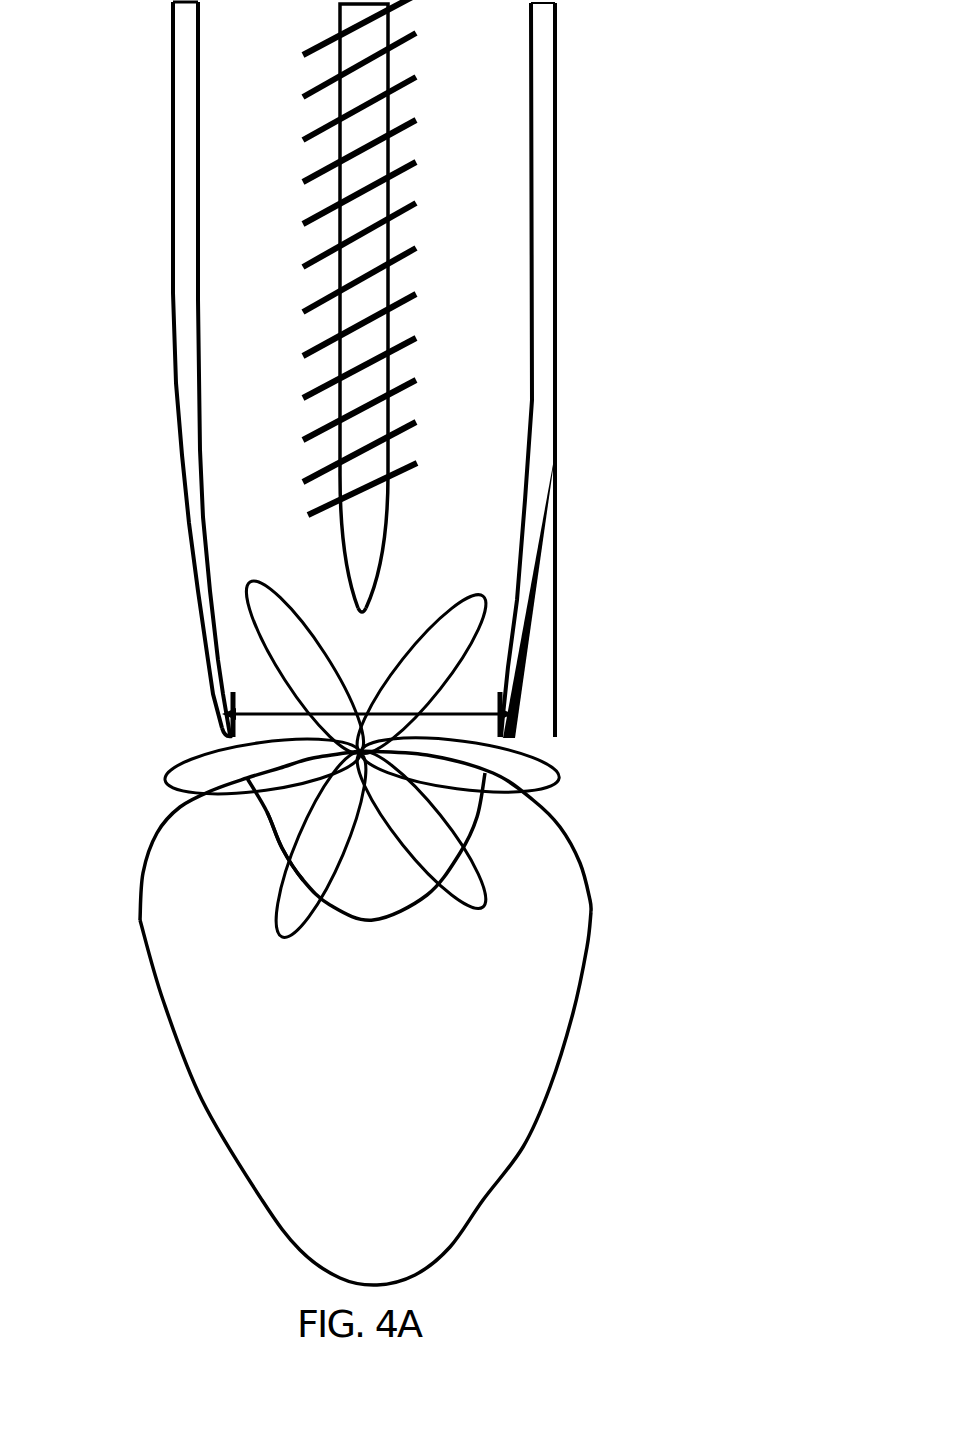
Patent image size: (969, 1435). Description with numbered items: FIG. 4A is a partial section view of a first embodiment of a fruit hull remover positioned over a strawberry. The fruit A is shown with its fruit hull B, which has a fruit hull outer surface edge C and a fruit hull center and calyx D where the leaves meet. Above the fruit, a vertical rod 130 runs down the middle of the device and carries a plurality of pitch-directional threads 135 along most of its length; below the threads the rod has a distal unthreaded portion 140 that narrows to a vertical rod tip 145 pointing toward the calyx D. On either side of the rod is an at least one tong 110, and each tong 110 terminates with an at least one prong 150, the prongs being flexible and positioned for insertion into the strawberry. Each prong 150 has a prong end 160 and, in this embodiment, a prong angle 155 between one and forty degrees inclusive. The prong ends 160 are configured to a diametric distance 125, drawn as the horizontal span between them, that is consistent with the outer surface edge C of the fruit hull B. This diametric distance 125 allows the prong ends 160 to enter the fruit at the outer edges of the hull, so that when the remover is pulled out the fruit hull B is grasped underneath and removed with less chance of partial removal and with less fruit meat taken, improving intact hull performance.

The tong 110 is at (369, 373).
The vertical rod 130 is at (228, 340).
The pitch-directional threads 135 is at (301, 130).
The prong 150 is at (153, 295).
The distal unthreaded portion 140 is at (321, 537).
The vertical rod tip 145 is at (346, 614).
The prong end 160 is at (205, 738).
The prong angle 155 is at (547, 578).
The diametric distance 125 is at (508, 712).
The fruit A is at (365, 1018).
The fruit hull B is at (351, 846).
The fruit hull outer surface edge C is at (270, 821).
The fruit hull center and calyx D is at (363, 727).